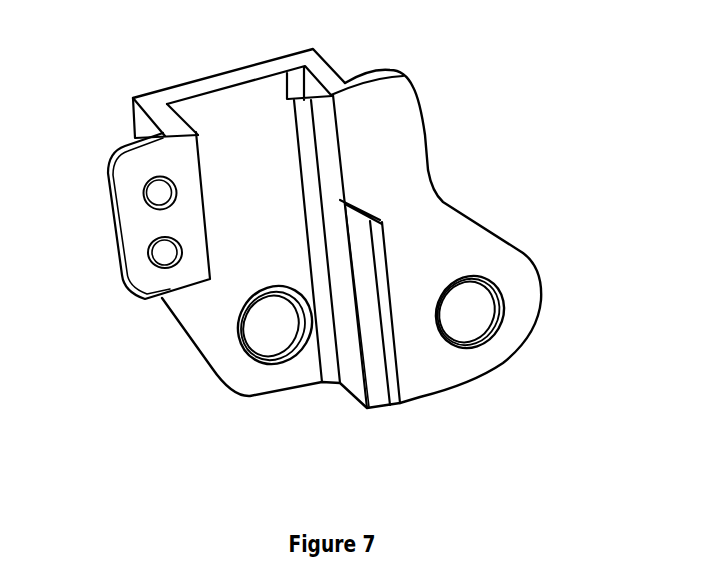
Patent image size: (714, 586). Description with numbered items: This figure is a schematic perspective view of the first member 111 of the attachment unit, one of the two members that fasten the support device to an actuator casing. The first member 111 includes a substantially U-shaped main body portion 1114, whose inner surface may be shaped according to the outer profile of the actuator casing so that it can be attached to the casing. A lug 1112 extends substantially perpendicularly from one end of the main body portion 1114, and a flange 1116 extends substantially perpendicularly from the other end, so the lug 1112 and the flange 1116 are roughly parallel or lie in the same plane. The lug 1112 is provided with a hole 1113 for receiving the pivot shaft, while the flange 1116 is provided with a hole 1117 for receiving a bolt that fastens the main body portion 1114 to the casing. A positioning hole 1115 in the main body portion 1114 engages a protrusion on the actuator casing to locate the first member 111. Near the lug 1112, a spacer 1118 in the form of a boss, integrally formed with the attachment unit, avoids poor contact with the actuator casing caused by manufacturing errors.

The first member 111 is at (334, 235).
The lug 1112 is at (395, 148).
The hole 1113 is at (475, 320).
The main body portion 1114 is at (227, 110).
The positioning hole 1115 is at (277, 337).
The flange 1116 is at (138, 263).
The hole 1117 is at (158, 194).
The spacer 1118 is at (310, 98).